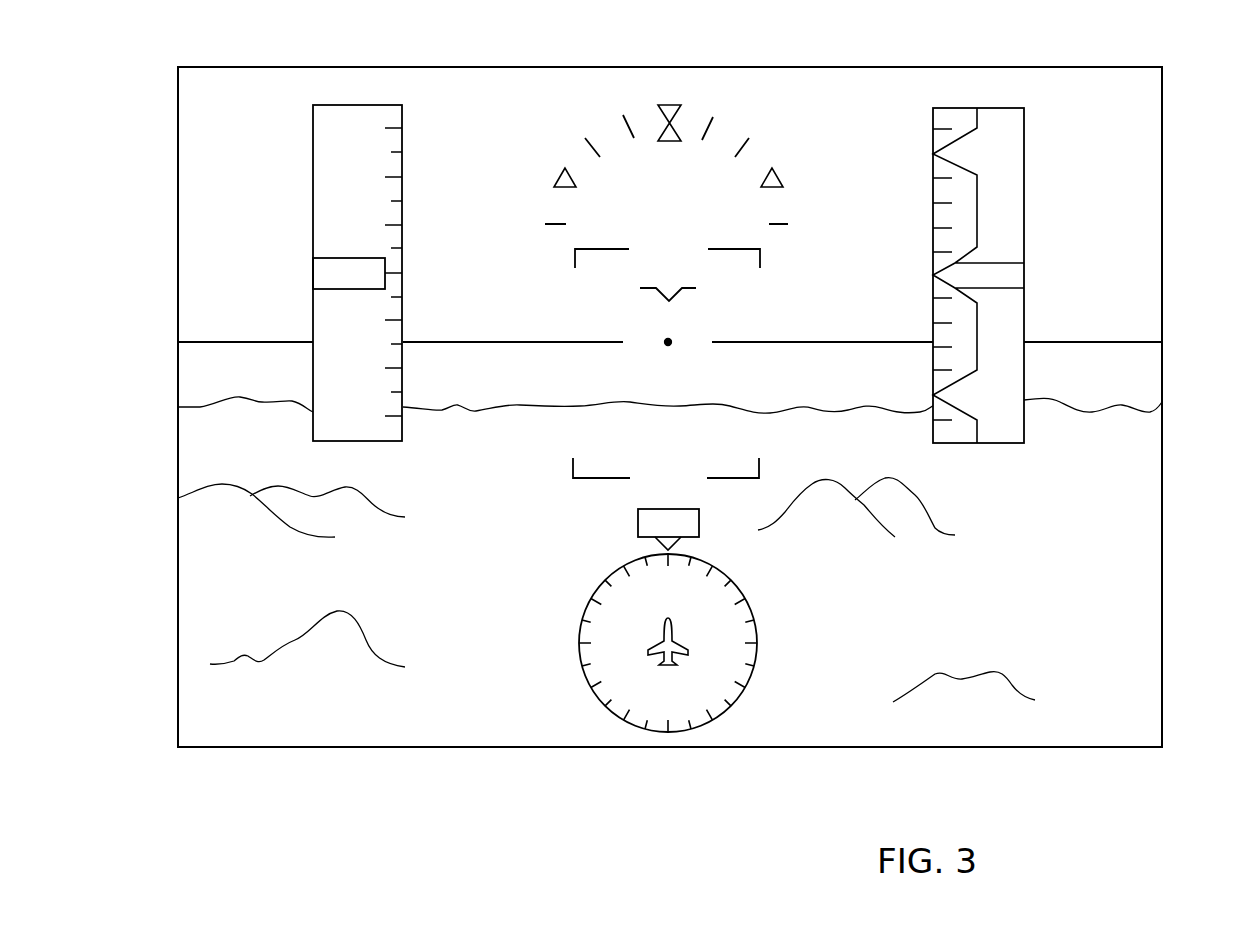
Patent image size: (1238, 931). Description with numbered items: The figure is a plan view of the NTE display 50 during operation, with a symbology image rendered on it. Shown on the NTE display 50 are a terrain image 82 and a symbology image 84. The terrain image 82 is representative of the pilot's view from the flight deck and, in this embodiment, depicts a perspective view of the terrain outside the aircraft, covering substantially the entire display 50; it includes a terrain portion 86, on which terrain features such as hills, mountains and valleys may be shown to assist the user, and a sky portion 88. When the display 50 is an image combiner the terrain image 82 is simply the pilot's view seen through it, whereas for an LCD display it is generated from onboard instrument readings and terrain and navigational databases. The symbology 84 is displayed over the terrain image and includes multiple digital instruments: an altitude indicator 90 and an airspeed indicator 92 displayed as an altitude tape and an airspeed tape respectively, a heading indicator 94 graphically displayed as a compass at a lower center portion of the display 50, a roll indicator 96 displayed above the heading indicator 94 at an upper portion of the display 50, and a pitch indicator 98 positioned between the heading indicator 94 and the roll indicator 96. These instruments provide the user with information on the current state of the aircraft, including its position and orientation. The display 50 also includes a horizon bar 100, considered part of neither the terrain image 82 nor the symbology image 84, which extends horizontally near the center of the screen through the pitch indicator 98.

The NTE display 50 is at (262, 66).
The terrain image 82 is at (1163, 65).
The symbology image 84 is at (1002, 754).
The terrain portion 86 is at (1130, 508).
The sky portion 88 is at (1137, 145).
The altitude indicator 90 is at (933, 173).
The airspeed indicator 92 is at (403, 170).
The heading indicator 94 is at (583, 605).
The roll indicator 96 is at (580, 150).
The pitch indicator 98 is at (716, 274).
The horizon bar 100 is at (1109, 343).